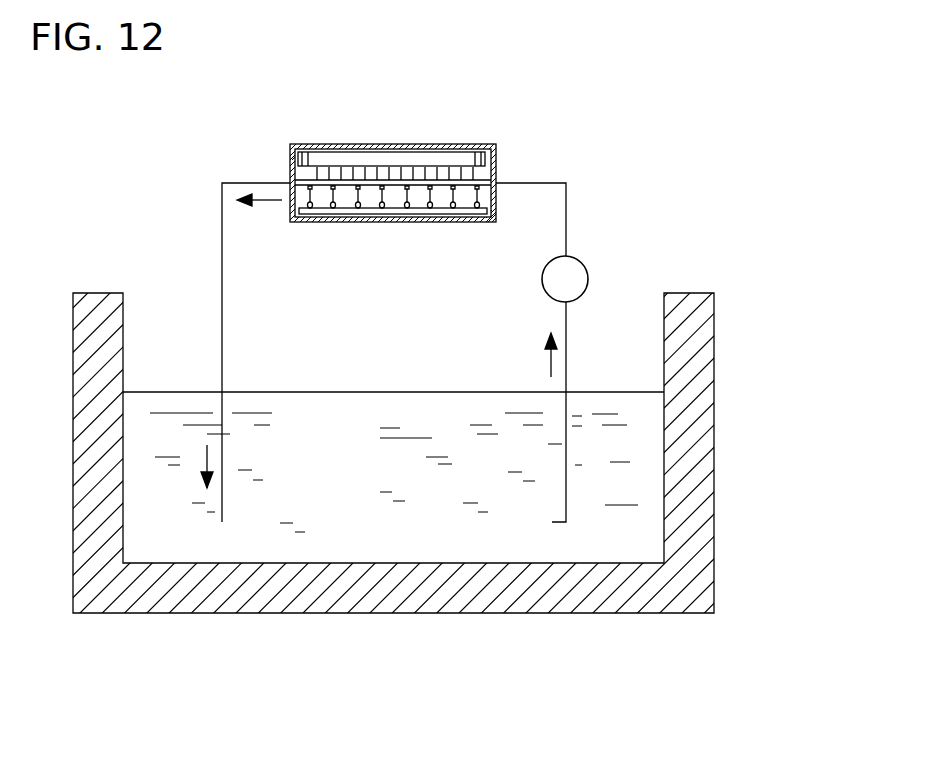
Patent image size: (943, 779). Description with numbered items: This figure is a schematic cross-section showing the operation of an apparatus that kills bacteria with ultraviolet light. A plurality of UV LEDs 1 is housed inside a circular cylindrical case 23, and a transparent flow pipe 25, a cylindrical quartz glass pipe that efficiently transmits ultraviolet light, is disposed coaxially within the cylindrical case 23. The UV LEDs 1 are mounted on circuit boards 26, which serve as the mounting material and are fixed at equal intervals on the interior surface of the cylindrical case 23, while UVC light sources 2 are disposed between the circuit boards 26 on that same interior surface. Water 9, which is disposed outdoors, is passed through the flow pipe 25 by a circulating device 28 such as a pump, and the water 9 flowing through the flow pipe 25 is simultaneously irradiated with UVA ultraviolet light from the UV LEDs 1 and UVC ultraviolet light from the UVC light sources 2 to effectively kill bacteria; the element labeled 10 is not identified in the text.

The UV LED 1 is at (308, 207).
The UVC light source 2 is at (422, 158).
The water 9 is at (441, 443).
The tank 10 is at (688, 460).
The cylindrical case 23 is at (467, 145).
The flow pipe 25 is at (395, 173).
The circuit board 26 is at (392, 213).
The circulating device 28 is at (587, 268).